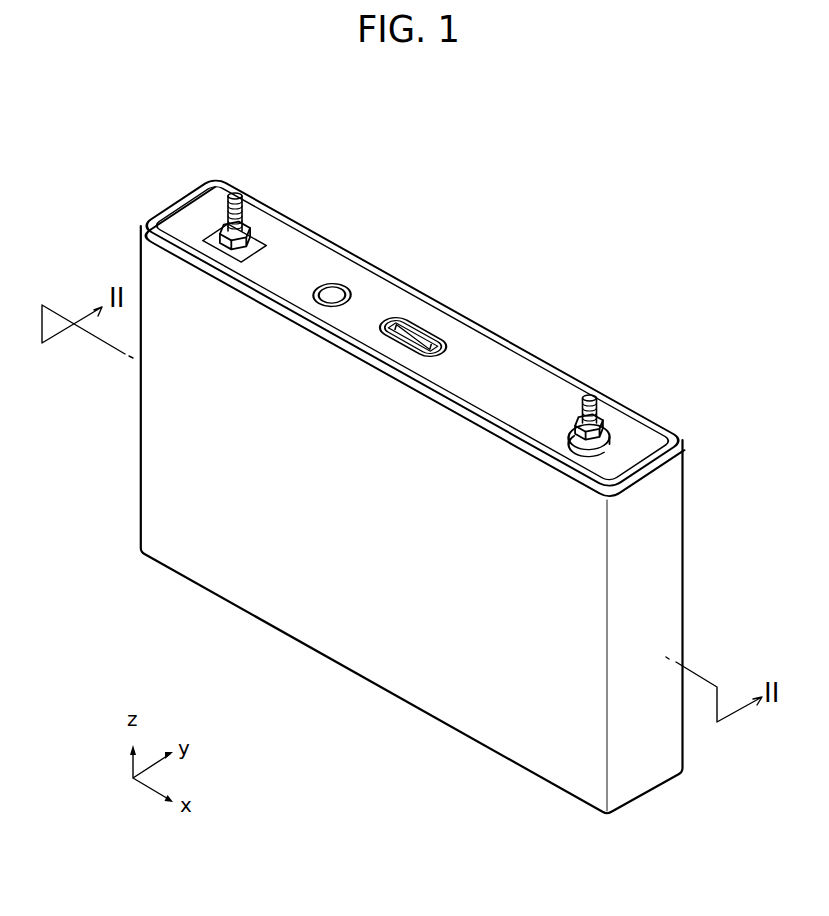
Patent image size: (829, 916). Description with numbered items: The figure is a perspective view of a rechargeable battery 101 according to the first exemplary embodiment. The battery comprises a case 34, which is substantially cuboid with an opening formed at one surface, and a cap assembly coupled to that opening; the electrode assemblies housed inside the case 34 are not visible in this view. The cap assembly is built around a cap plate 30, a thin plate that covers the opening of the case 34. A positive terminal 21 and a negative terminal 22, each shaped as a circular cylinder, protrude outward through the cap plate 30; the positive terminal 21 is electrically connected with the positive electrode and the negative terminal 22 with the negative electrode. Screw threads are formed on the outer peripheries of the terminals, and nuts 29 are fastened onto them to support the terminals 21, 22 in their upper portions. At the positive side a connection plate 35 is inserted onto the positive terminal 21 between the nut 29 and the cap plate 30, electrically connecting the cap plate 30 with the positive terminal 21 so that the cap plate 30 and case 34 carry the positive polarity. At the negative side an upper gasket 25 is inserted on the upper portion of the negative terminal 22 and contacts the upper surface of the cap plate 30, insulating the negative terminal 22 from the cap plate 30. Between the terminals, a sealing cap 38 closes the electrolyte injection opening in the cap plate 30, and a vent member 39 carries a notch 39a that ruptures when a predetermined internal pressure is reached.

The rechargeable battery 101 is at (545, 270).
The positive terminal 21 is at (235, 196).
The negative terminal 22 is at (588, 398).
The upper gasket 25 is at (609, 440).
The nut 29 is at (598, 423).
The cap plate 30 is at (291, 246).
The case 34 is at (348, 647).
The connection plate 35 is at (212, 237).
The sealing cap 38 is at (333, 293).
The vent member 39 is at (407, 330).
The notch 39a is at (423, 341).